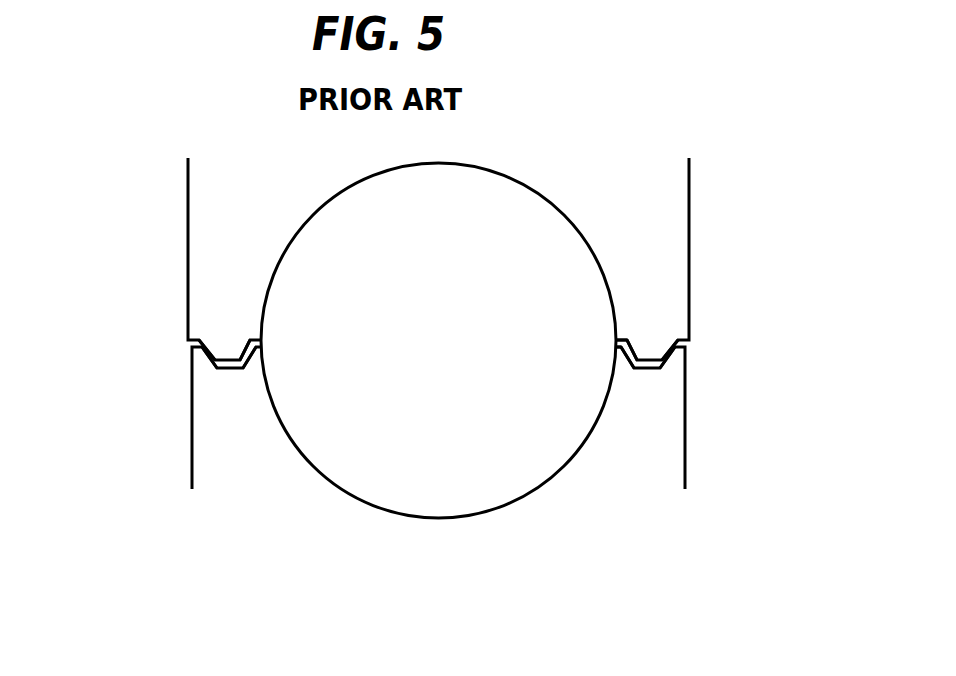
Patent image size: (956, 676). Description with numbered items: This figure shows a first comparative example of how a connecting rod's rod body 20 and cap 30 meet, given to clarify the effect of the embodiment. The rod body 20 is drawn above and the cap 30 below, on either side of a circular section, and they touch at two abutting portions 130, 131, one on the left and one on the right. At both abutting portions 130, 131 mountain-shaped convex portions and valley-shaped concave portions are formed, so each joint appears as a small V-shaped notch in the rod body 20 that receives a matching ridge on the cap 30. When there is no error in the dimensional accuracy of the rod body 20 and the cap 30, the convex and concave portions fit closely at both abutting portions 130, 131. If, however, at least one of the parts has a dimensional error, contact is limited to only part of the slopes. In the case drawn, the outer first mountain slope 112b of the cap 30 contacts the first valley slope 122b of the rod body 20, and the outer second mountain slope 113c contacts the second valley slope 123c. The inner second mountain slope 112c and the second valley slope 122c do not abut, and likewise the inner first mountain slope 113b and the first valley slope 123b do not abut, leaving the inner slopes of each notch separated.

The rod body 20 is at (175, 260).
The cap 30 is at (175, 420).
The abutting portion 130 is at (285, 337).
The abutting portion 131 is at (585, 343).
The first valley slope 122b is at (203, 363).
The second valley slope 122c is at (252, 347).
The outer first mountain slope 112b is at (202, 364).
The inner second mountain slope 112c is at (252, 353).
The first valley slope 123b is at (620, 350).
The second valley slope 123c is at (675, 353).
The inner first mountain slope 113b is at (626, 356).
The outer second mountain slope 113c is at (676, 364).